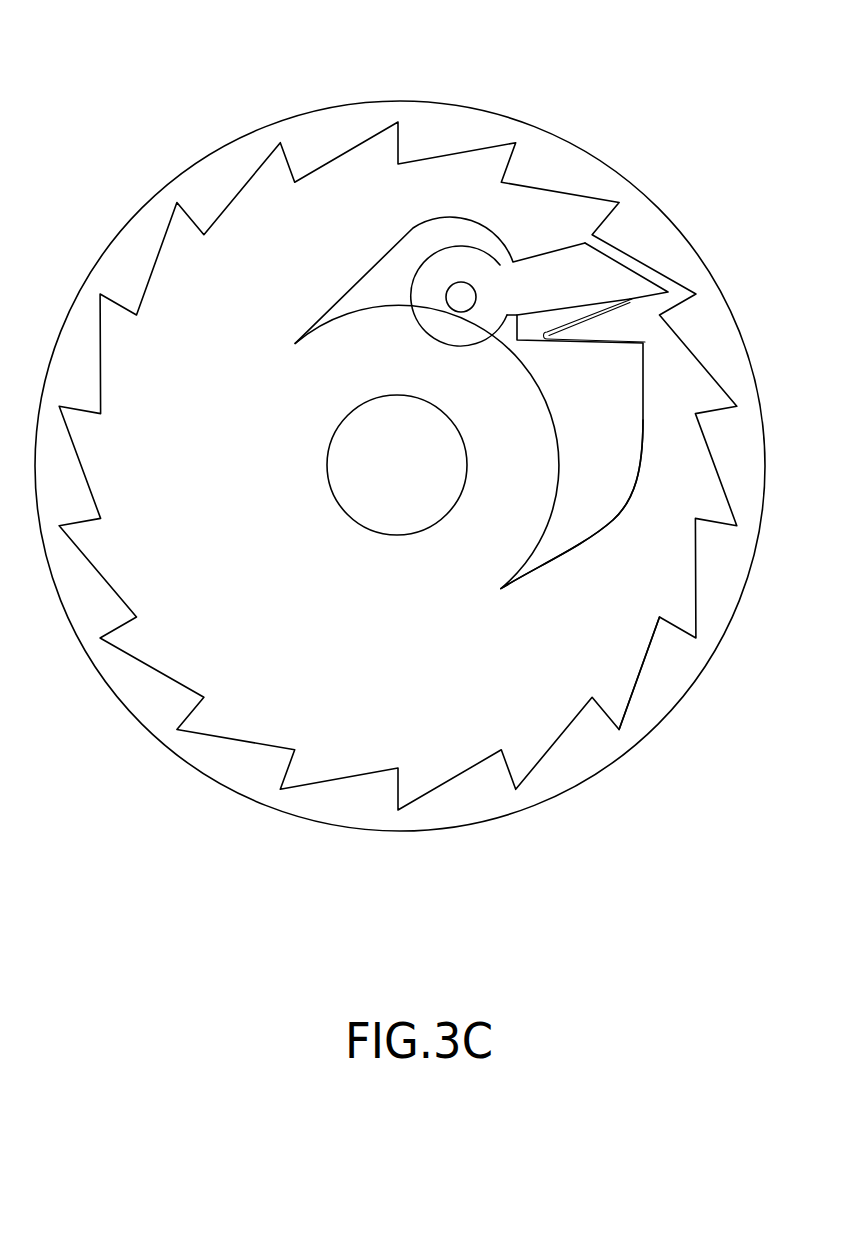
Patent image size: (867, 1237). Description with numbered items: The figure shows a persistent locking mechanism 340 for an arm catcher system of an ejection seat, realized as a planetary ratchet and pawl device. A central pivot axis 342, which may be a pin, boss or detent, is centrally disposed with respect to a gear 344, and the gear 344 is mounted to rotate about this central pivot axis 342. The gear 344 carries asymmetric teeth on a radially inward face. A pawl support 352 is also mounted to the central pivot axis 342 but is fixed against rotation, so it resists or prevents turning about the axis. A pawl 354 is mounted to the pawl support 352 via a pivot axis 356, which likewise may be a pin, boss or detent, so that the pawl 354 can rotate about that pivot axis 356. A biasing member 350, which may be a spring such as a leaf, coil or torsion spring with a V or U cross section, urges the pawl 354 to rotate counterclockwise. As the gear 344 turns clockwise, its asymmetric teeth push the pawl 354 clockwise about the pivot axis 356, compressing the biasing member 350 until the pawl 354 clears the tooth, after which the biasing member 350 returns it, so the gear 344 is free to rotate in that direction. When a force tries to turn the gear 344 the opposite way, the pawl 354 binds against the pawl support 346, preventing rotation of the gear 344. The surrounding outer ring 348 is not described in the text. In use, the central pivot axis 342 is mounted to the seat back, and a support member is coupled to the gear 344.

The persistent locking mechanism 340 is at (146, 93).
The central pivot axis 342 is at (397, 510).
The gear 344 is at (525, 688).
The pawl support 346 is at (640, 675).
The housing 348 is at (650, 200).
The biasing member 350 is at (650, 340).
The pawl support 352 is at (590, 517).
The pawl 354 is at (620, 260).
The pivot axis 356 is at (460, 293).